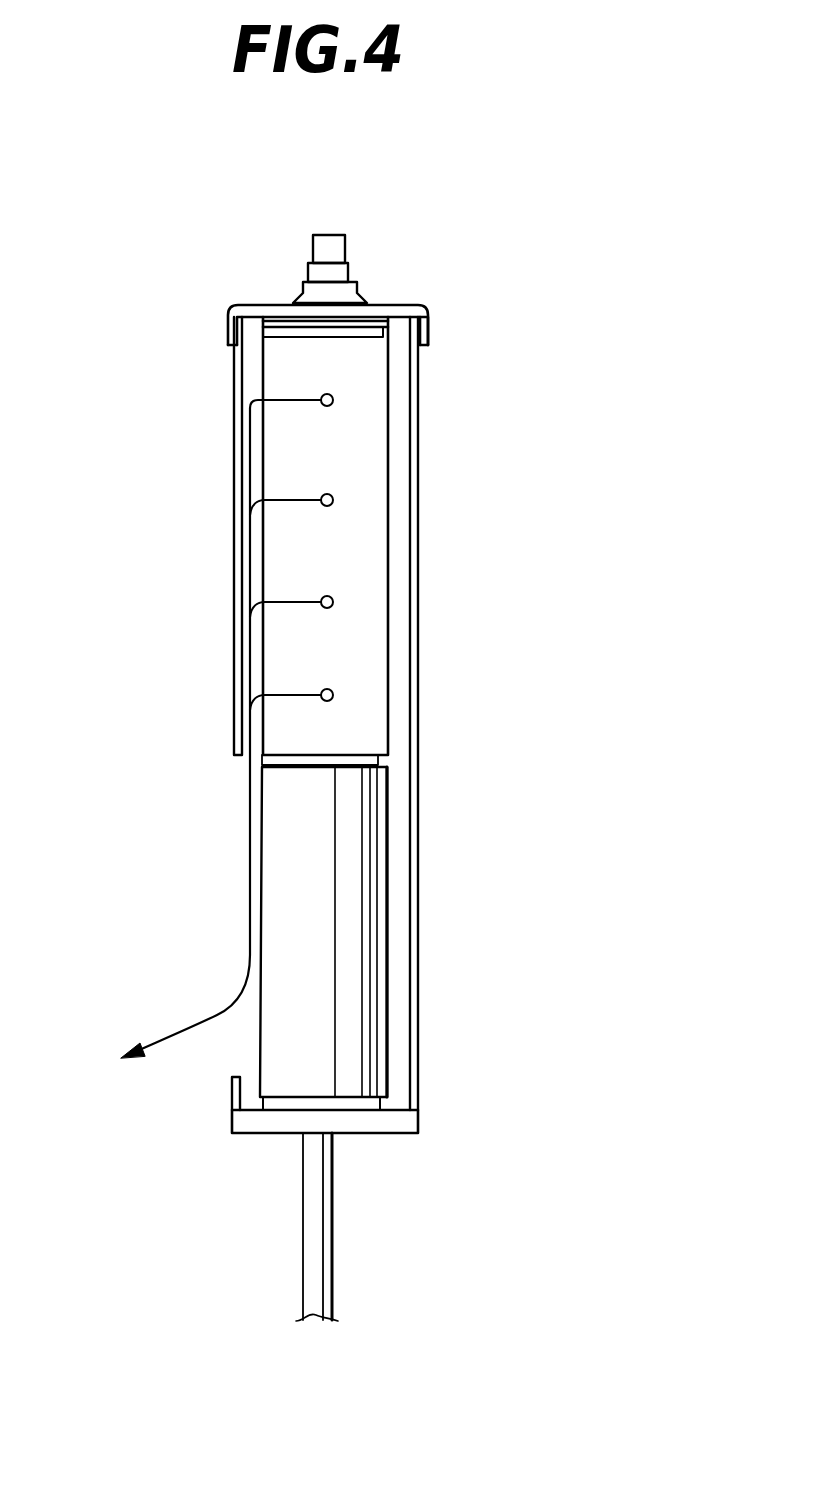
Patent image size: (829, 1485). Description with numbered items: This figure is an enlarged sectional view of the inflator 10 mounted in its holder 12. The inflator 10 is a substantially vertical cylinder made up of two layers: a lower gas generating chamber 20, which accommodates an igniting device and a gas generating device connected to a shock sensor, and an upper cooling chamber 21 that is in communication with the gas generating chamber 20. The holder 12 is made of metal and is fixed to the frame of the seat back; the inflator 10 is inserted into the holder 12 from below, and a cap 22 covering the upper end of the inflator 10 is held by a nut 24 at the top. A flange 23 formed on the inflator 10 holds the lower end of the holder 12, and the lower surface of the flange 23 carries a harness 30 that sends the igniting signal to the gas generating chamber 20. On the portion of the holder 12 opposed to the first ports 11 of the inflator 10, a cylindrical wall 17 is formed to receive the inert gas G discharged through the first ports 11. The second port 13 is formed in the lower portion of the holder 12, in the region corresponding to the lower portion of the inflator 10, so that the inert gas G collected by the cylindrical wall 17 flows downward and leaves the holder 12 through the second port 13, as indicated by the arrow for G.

The inflator 10 is at (395, 332).
The first ports 11 is at (321, 396).
The holder 12 is at (423, 428).
The second port 13 is at (248, 1000).
The cylindrical wall 17 is at (233, 596).
The gas generating chamber 20 is at (363, 937).
The cooling chamber 21 is at (372, 620).
The cap 22 is at (428, 323).
The flange 23 is at (398, 1122).
The nut 24 is at (353, 273).
The harness 30 is at (318, 1253).
The inert gas G is at (217, 1012).